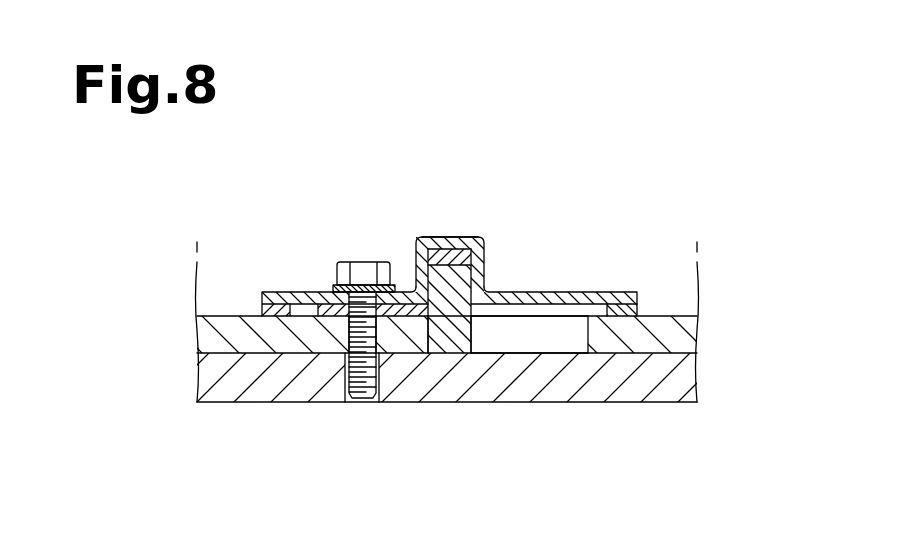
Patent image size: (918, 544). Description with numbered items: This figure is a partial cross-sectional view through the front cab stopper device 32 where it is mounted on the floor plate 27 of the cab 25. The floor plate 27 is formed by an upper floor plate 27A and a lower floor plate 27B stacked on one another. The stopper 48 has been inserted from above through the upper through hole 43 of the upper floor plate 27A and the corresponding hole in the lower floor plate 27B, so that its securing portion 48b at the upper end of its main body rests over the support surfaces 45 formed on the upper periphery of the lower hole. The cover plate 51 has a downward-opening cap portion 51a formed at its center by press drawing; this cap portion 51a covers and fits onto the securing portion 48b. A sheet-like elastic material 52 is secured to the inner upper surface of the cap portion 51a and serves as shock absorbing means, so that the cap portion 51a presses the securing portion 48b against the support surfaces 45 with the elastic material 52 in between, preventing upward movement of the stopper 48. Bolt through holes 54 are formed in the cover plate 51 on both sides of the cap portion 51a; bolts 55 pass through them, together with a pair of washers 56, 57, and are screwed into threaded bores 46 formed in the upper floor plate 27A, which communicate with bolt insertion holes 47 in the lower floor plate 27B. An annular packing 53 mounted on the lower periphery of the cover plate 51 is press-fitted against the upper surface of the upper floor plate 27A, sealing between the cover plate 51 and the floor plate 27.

The cab 25 is at (700, 289).
The floor plate 27 is at (443, 412).
The upper floor plate 27A is at (232, 343).
The lower floor plate 27B is at (185, 458).
The front cab stopper device 32 is at (447, 303).
The upper through hole 43 is at (588, 336).
The support surfaces 45 is at (440, 343).
The threaded bores 46 is at (380, 340).
The bolt insertion holes 47 is at (355, 399).
The stopper 48 is at (447, 348).
The securing portion 48b is at (462, 279).
The cover plate 51 is at (590, 292).
The cap portion 51a is at (457, 240).
The elastic material 52 is at (482, 250).
The packing 53 is at (640, 310).
The bolt through holes 54 is at (365, 291).
The bolts 55 is at (381, 262).
The washer 56 is at (328, 312).
The washer 57 is at (317, 300).